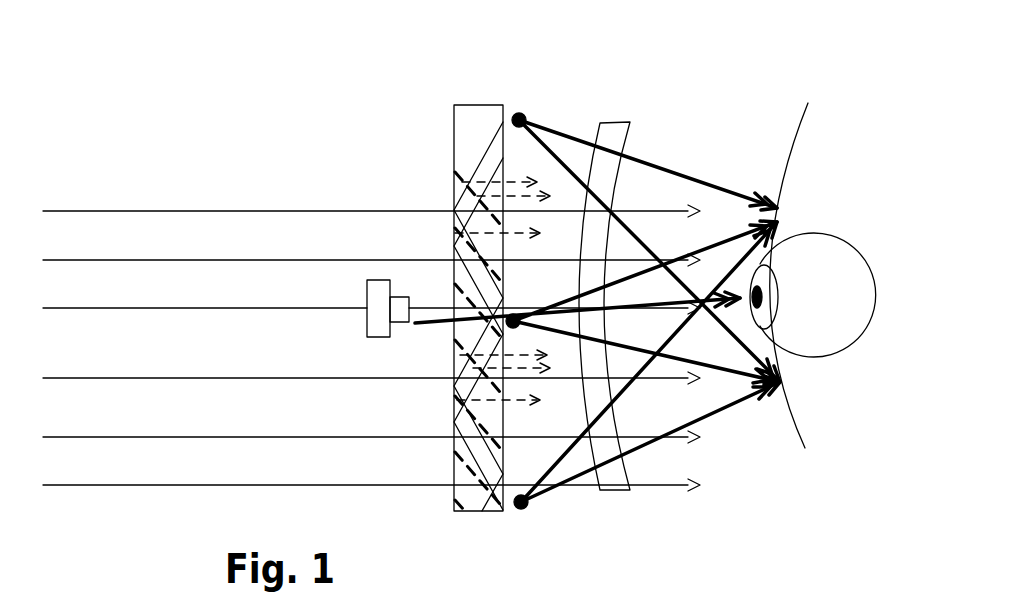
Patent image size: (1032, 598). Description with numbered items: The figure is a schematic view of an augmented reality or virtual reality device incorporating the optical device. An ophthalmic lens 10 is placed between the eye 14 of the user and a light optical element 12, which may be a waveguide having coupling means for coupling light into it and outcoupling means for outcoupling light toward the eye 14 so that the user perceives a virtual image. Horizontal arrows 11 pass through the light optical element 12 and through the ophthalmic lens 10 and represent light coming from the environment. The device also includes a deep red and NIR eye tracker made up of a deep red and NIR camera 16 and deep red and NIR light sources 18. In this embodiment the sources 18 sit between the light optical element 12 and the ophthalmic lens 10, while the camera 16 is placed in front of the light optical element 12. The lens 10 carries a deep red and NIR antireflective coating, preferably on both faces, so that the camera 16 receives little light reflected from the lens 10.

The ophthalmic lens 10 is at (633, 143).
The horizontal arrows 11 is at (166, 211).
The light optical element 12 is at (477, 103).
The eye 14 is at (818, 233).
The deep red and NIR camera 16 is at (380, 288).
The deep red and NIR light source 18 is at (522, 112).